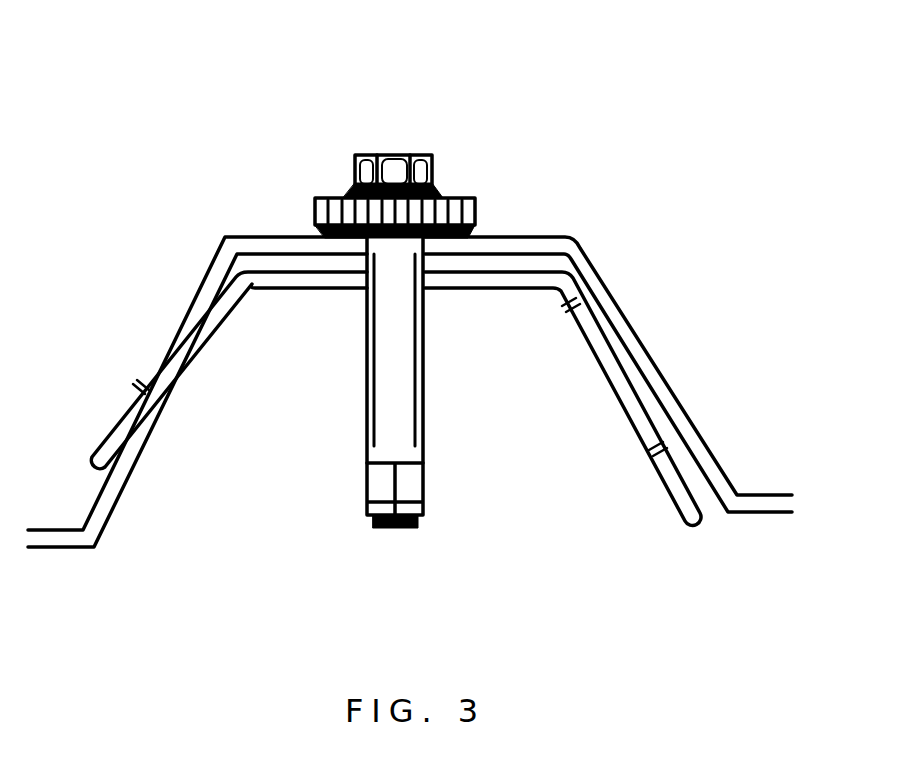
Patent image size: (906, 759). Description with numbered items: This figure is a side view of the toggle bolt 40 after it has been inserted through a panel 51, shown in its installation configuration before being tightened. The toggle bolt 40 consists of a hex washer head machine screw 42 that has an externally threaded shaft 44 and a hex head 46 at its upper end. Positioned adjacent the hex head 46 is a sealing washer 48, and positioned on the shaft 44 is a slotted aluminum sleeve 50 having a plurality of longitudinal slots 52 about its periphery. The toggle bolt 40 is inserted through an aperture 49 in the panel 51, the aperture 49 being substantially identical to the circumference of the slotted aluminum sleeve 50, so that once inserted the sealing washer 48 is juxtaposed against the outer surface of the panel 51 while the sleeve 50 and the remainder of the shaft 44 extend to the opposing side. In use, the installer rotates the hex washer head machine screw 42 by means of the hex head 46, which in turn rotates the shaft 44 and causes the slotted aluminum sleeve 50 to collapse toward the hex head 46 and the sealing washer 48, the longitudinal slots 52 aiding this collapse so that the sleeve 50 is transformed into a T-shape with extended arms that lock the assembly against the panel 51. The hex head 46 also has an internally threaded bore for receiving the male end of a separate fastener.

The toggle bolt 40 is at (623, 100).
The hex washer head machine screw 42 is at (477, 194).
The externally threaded shaft 44 is at (395, 528).
The hex head 46 is at (393, 155).
The sealing washer 48 is at (473, 232).
The aperture 49 is at (354, 290).
The slotted aluminum sleeve 50 is at (422, 452).
The panel 51 is at (225, 237).
The longitudinal slots 52 is at (367, 367).